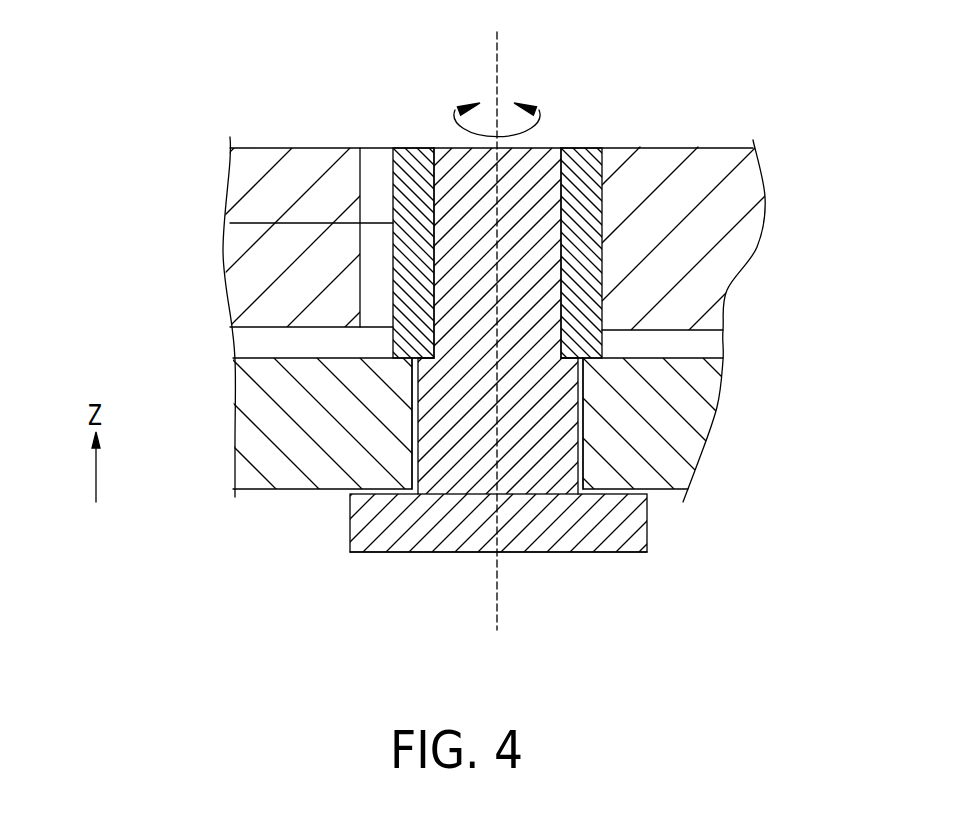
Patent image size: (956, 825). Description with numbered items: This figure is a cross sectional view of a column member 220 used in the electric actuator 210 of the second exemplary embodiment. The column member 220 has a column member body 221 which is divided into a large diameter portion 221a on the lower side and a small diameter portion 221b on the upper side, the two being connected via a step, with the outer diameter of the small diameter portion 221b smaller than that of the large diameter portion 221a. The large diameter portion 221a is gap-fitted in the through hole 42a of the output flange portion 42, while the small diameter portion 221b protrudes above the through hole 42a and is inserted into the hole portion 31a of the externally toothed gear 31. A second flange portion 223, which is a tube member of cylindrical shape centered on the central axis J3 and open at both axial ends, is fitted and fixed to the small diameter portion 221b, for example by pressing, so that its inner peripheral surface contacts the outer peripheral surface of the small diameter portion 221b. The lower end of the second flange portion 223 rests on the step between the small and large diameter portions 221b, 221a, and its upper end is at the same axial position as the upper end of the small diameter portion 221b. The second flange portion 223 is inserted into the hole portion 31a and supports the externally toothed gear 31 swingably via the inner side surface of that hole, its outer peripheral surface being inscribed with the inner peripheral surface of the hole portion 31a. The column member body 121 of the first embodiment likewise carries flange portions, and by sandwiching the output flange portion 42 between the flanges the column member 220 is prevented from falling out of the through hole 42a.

The electric actuator 210 is at (830, 33).
The externally toothed gear 31 is at (730, 162).
The hole portion 31a is at (363, 187).
The column member body 221 is at (132, 198).
The large diameter portion 221a is at (463, 417).
The small diameter portion 221b is at (467, 243).
The second flange portion 223 is at (593, 304).
The output flange portion 42 is at (690, 412).
The through hole 42a is at (419, 437).
The column member 220 is at (588, 568).
The column member body 121 is at (368, 530).
The central axis J3 is at (502, 70).